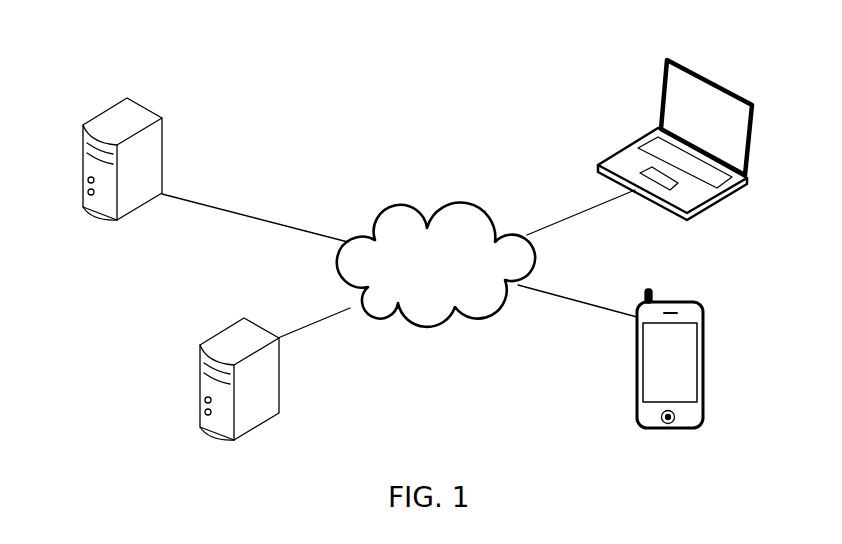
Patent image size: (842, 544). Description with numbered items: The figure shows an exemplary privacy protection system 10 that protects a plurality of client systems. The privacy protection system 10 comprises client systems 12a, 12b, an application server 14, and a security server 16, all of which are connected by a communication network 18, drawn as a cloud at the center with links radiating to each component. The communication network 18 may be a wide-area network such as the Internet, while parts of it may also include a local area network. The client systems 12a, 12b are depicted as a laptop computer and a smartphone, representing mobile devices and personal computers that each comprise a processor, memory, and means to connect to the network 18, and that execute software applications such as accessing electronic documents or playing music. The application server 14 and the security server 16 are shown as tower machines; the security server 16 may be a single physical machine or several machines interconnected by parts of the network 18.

The privacy protection system 10 is at (368, 117).
The client system 12a is at (738, 192).
The client system 12b is at (637, 392).
The application server 14 is at (127, 97).
The security server 16 is at (245, 317).
The communication network 18 is at (437, 328).